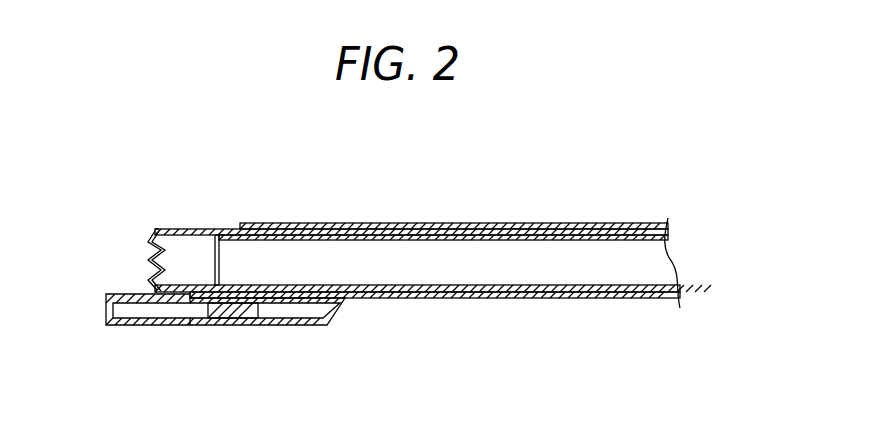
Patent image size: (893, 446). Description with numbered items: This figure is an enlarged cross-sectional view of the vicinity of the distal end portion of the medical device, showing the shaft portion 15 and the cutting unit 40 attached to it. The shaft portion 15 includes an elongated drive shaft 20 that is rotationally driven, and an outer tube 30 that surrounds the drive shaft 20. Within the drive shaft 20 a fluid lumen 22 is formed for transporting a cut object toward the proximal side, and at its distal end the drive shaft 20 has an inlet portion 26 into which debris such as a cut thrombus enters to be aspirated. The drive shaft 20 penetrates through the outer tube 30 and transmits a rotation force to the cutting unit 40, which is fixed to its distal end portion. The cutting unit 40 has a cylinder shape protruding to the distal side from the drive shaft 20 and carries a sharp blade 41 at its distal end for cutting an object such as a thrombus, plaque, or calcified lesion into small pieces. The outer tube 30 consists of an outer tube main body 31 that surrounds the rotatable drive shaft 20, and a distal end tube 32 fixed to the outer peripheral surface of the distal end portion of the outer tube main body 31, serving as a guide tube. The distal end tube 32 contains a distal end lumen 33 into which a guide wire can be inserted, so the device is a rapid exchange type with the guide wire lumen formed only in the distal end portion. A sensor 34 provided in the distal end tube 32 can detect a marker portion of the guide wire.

The shaft portion 15 is at (607, 224).
The drive shaft 20 is at (573, 298).
The fluid lumen 22 is at (602, 267).
The inlet portion 26 is at (217, 233).
The outer tube 30 is at (560, 224).
The outer tube main body 31 is at (447, 298).
The distal end tube 32 is at (155, 325).
The distal end lumen 33 is at (298, 325).
The sensor 34 is at (237, 325).
The cutting unit 40 is at (183, 229).
The blade 41 is at (148, 246).